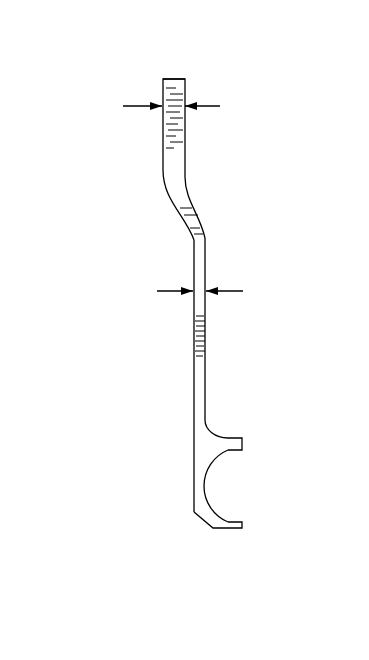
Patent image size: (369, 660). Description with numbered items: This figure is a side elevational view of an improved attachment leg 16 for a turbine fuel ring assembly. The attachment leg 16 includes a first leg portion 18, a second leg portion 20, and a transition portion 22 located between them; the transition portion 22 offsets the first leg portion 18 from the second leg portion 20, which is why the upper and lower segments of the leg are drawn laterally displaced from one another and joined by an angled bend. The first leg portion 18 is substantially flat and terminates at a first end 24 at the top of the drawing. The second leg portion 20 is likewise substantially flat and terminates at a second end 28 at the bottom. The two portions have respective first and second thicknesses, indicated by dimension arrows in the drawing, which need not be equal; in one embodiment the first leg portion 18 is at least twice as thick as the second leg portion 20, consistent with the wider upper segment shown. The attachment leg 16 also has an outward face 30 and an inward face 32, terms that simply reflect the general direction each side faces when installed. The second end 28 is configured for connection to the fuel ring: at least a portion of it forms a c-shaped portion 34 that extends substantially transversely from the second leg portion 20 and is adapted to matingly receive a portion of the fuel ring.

The attachment leg 16 is at (85, 147).
The first leg portion 18 is at (176, 150).
The second leg portion 20 is at (203, 388).
The transition portion 22 is at (192, 222).
The first end 24 is at (172, 79).
The second end 28 is at (167, 478).
The outward face 30 is at (133, 193).
The inward face 32 is at (253, 262).
The c-shaped portion 34 is at (220, 480).